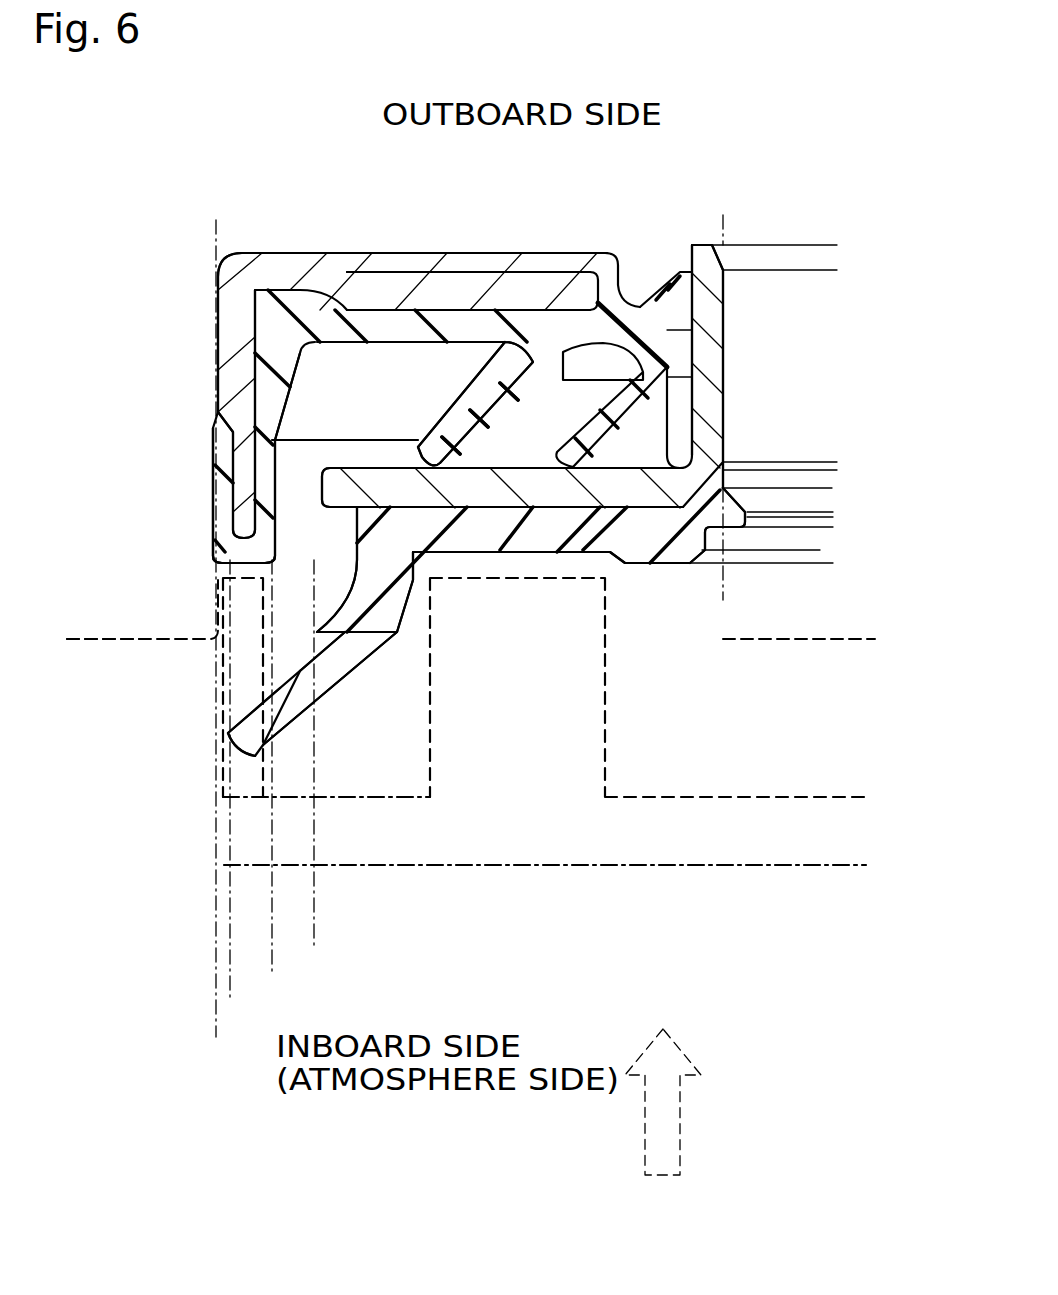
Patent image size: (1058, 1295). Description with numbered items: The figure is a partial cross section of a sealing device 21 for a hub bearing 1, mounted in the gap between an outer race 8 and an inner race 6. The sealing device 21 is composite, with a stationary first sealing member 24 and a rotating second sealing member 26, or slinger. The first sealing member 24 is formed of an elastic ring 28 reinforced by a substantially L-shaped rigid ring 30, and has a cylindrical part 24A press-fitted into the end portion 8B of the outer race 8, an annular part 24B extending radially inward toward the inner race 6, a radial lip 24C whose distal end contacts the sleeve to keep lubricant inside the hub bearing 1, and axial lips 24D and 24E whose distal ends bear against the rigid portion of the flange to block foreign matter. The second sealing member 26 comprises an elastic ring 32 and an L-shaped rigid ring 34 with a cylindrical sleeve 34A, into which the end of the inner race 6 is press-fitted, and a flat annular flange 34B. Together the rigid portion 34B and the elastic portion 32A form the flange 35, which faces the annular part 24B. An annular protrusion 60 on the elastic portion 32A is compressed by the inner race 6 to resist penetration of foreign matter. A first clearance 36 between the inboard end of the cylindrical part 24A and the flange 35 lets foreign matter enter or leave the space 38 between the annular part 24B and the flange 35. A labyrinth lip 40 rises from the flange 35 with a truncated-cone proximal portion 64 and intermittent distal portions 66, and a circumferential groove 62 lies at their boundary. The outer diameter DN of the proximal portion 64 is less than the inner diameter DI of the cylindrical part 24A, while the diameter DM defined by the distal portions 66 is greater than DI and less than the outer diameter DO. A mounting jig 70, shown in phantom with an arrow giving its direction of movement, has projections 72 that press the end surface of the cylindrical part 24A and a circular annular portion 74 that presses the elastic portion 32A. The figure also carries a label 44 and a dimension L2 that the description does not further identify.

The hub bearing 1 is at (200, 722).
The inner race 6 is at (745, 641).
The outer race 8 is at (108, 642).
The end portion of the outer race 8B is at (84, 642).
The sealing device 21 is at (350, 698).
The first sealing member 24 is at (276, 218).
The cylindrical part 24A is at (232, 337).
The annular part 24B is at (368, 270).
The radial lip 24C is at (652, 300).
The axial lip 24D is at (500, 415).
The axial lip 24E is at (637, 408).
The second sealing member 26 is at (655, 614).
The elastic ring 28 is at (580, 265).
The rigid ring 30 is at (287, 250).
The elastic ring 32 is at (497, 535).
The elastic portion of the flange 32A is at (537, 540).
The rigid ring 34 is at (718, 353).
The cylindrical sleeve 34A is at (720, 332).
The annular flange 34B is at (560, 493).
The flange 35 is at (470, 535).
The first clearance 36 is at (283, 470).
The space 38 is at (335, 373).
The labyrinth lip 40 is at (357, 650).
The slinger tip portion 44 is at (240, 633).
The annular protrusion 60 is at (730, 520).
The circumferential groove 62 is at (345, 520).
The proximal portion 64 is at (397, 622).
The distal portions 66 is at (328, 678).
The mounting jig 70 is at (368, 866).
The projections 72 is at (218, 757).
The circular annular portion 74 is at (606, 706).
The length L2 is at (318, 410).
The outer diameter of the proximal portion DN is at (314, 940).
The inner diameter of the cylindrical part DI is at (272, 964).
The diameter of circle defined by the distal portions DM is at (230, 989).
The outer diameter of the cylindrical part DO is at (216, 1014).